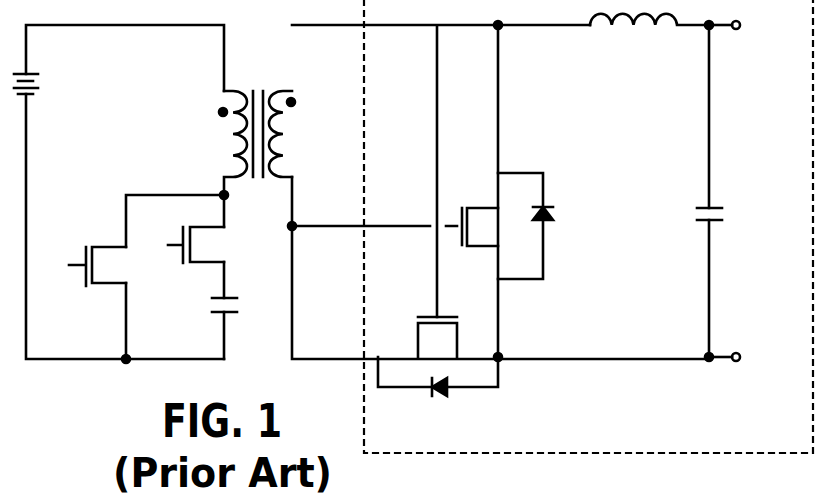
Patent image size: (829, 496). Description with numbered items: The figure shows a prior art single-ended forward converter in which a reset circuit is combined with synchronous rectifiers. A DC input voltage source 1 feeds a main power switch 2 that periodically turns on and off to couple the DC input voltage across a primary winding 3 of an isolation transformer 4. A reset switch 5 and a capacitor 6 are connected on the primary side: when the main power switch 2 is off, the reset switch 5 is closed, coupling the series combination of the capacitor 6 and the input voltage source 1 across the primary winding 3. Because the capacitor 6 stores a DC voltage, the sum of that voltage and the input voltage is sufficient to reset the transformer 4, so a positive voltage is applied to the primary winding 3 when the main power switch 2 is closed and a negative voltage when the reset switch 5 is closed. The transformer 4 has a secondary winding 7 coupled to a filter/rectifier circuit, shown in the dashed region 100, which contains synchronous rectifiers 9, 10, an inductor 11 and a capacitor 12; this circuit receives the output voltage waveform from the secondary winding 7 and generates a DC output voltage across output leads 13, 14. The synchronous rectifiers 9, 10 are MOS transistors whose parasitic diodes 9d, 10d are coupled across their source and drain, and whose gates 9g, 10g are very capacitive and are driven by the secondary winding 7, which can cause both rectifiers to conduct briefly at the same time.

The DC input voltage source 1 is at (31, 74).
The main power switch 2 is at (112, 284).
The primary winding 3 is at (219, 140).
The isolation transformer 4 is at (260, 90).
The reset switch 5 is at (223, 247).
The capacitor 6 is at (226, 330).
The secondary winding 7 is at (292, 128).
The synchronous rectifier 9 is at (425, 358).
The gate 9g is at (432, 316).
The parasitic diode 9d is at (436, 394).
The synchronous rectifier 10 is at (472, 206).
The gate 10g is at (455, 213).
The parasitic diode 10d is at (545, 205).
The inductor 11 is at (643, 28).
The capacitor 12 is at (715, 224).
The output lead 13 is at (722, 22).
The output lead 14 is at (723, 355).
The synchronous rectifier circuit 100 is at (588, 248).